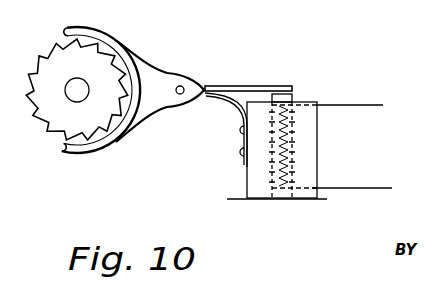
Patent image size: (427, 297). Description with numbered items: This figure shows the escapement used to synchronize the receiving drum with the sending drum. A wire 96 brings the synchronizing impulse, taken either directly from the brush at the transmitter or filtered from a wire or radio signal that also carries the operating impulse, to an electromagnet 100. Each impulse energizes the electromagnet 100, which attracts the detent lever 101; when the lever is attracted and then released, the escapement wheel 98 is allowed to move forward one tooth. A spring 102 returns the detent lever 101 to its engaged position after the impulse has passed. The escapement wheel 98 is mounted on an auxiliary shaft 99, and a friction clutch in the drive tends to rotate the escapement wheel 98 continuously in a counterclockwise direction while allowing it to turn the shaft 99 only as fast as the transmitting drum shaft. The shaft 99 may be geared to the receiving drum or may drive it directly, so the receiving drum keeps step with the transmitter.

The wire 96 is at (358, 104).
The escapement wheel 98 is at (97, 133).
The auxiliary shaft 99 is at (85, 82).
The electromagnet 100 is at (253, 170).
The detent lever 101 is at (270, 85).
The spring 102 is at (228, 103).